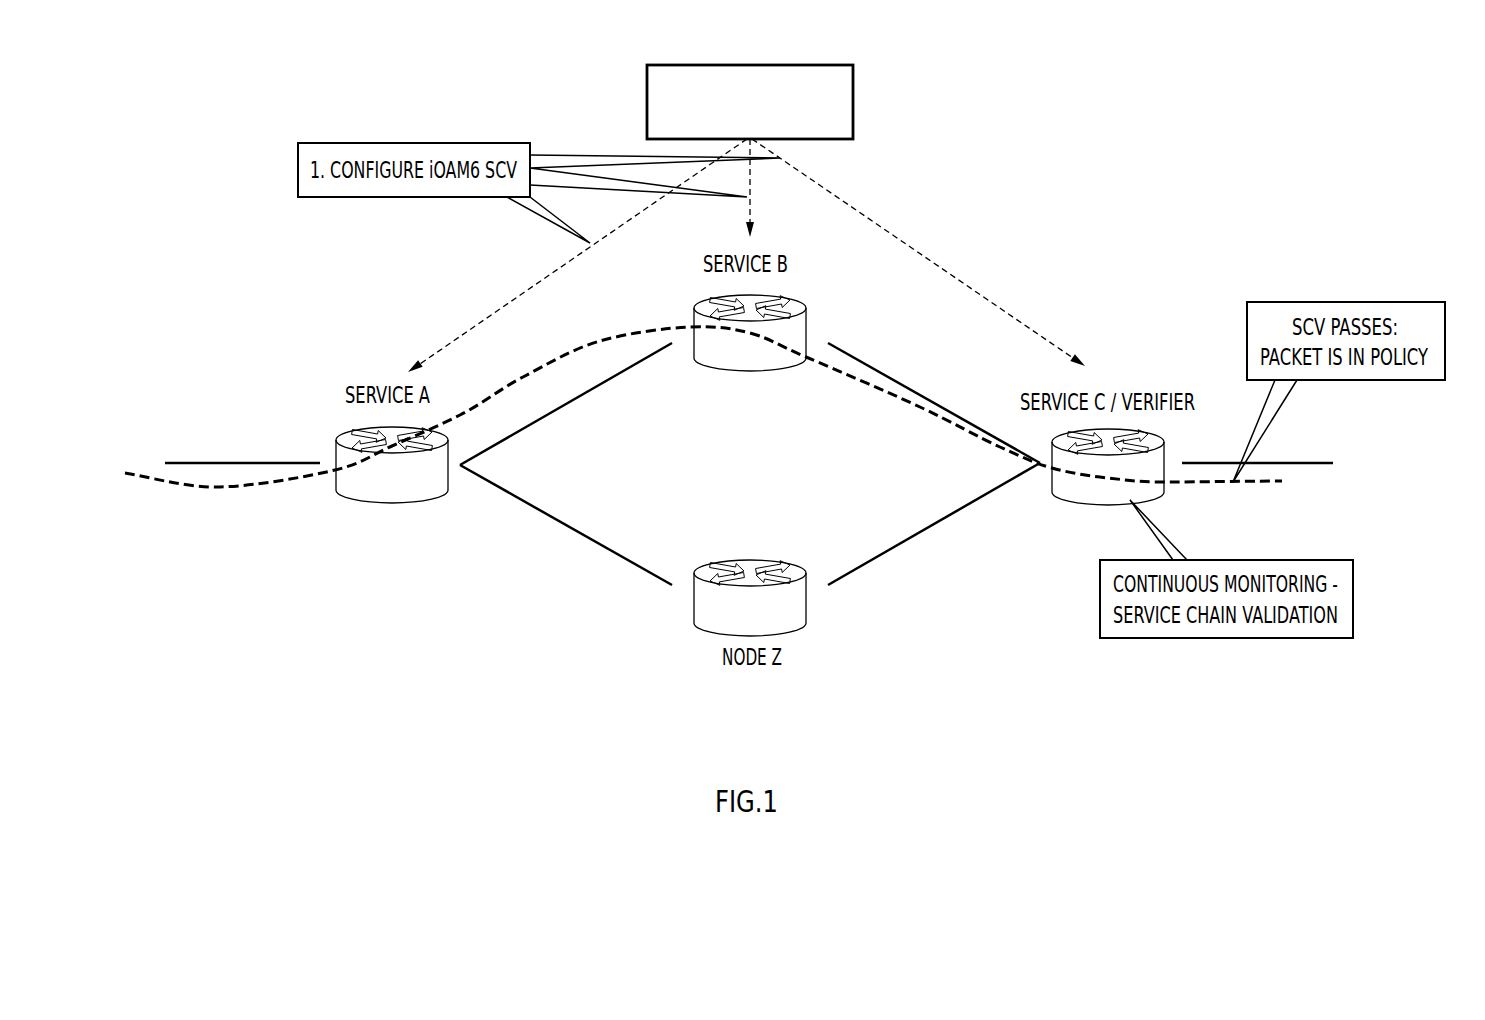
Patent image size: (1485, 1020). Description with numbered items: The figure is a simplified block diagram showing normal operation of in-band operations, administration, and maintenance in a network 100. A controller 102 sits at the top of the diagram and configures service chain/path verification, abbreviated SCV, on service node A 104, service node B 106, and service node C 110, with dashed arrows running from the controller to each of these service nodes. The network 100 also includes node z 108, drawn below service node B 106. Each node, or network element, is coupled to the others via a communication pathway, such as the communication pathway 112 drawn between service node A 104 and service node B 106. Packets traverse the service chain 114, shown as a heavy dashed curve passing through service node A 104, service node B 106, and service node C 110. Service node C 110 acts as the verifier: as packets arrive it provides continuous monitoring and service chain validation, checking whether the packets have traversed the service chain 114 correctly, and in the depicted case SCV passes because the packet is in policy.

The network 100 is at (1122, 105).
The controller 102 is at (853, 101).
The service node A 104 is at (373, 500).
The service node B 106 is at (758, 368).
The node z 108 is at (730, 560).
The service node C 110 is at (1075, 498).
The communication pathway 112 is at (550, 415).
The service chain 114 is at (207, 487).